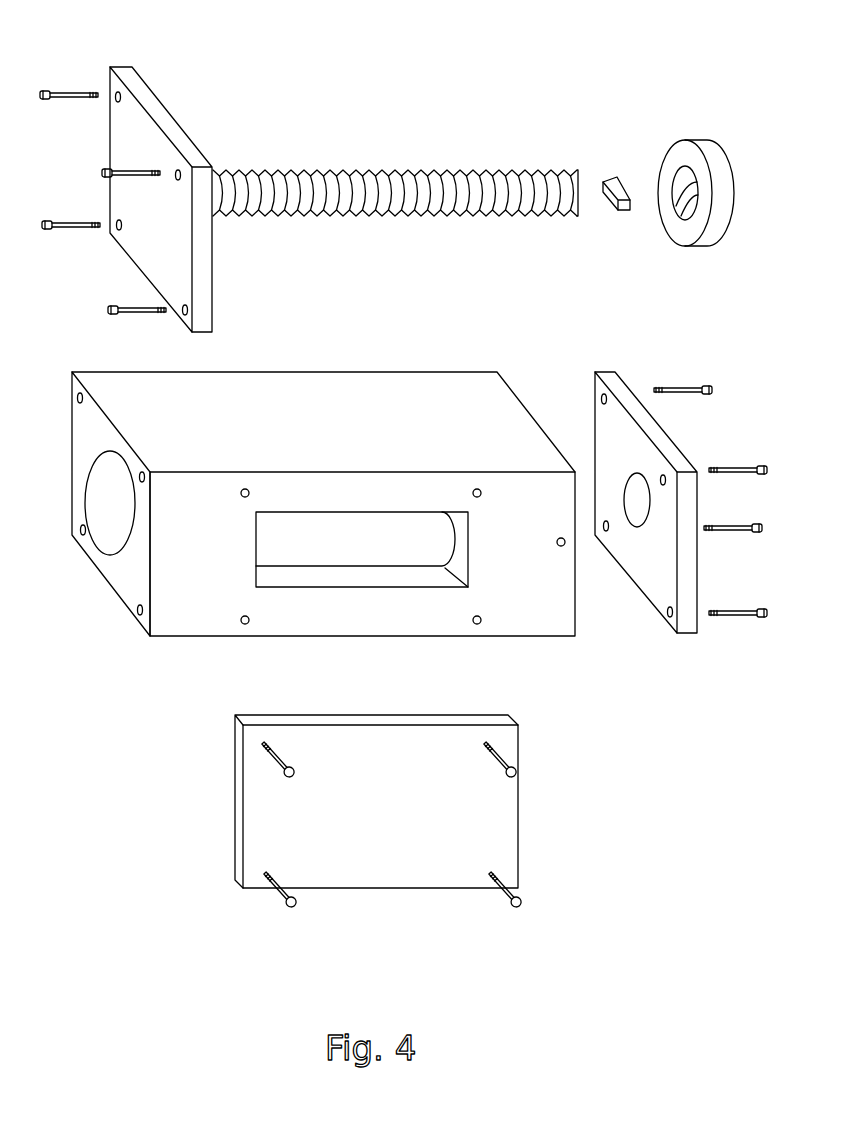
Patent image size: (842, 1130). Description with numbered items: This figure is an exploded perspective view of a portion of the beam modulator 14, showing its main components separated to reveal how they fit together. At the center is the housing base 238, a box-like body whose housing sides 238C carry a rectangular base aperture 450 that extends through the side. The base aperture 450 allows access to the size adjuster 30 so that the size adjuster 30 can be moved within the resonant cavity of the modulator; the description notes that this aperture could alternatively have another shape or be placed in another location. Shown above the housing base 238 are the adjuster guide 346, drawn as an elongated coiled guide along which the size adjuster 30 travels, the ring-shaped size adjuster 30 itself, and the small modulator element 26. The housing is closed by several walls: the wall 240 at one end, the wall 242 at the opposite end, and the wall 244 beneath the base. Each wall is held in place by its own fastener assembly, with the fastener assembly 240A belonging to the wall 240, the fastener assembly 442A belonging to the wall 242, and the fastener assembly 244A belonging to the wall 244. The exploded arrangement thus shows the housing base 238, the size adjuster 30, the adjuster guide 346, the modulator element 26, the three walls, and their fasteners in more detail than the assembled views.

The beam modulator 14 is at (577, 88).
The fastener assembly 240A is at (70, 93).
The wall 240 is at (168, 127).
The adjuster guide 346 is at (362, 170).
The modulator element 26 is at (622, 213).
The size adjuster 30 is at (720, 222).
The housing base 238 is at (313, 494).
The housing side 238C is at (167, 608).
The base aperture 450 is at (325, 577).
The wall 242 is at (607, 372).
The fastener assembly 442A is at (685, 382).
The wall 244 is at (257, 830).
The fastener assembly 244A is at (280, 755).